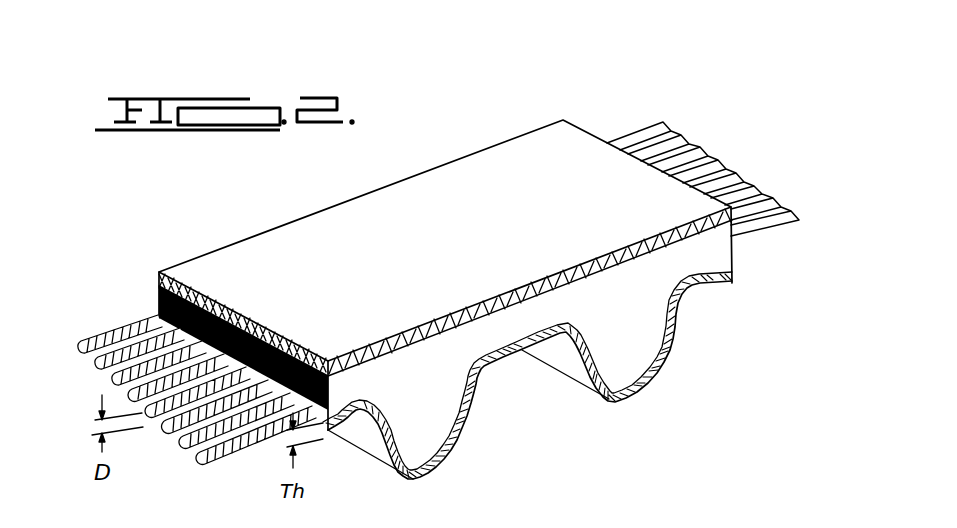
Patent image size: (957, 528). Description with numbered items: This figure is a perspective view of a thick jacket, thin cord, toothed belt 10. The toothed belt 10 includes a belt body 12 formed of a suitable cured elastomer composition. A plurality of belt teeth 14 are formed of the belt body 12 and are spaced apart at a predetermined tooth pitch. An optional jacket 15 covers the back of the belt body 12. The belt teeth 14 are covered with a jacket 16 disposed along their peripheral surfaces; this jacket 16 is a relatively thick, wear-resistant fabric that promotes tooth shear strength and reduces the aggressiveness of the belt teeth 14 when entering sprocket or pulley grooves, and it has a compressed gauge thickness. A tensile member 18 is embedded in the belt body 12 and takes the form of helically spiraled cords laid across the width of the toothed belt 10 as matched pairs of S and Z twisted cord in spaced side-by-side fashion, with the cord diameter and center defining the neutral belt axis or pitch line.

The toothed belt 10 is at (194, 224).
The belt body 12 is at (712, 257).
The belt teeth 14 is at (472, 437).
The jacket 15 is at (465, 177).
The jacket 16 is at (720, 285).
The tensile member 18 is at (232, 443).